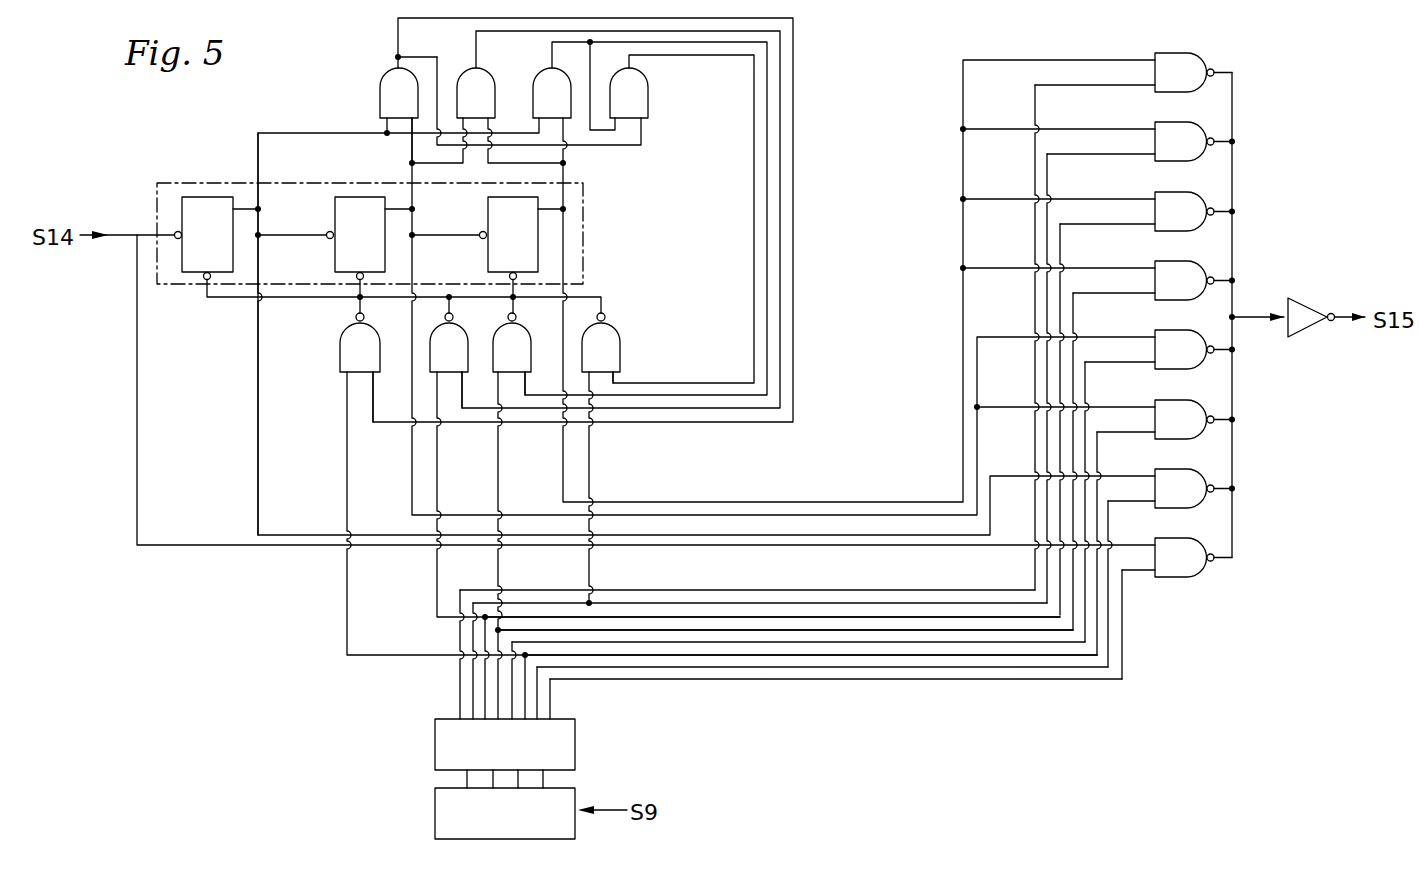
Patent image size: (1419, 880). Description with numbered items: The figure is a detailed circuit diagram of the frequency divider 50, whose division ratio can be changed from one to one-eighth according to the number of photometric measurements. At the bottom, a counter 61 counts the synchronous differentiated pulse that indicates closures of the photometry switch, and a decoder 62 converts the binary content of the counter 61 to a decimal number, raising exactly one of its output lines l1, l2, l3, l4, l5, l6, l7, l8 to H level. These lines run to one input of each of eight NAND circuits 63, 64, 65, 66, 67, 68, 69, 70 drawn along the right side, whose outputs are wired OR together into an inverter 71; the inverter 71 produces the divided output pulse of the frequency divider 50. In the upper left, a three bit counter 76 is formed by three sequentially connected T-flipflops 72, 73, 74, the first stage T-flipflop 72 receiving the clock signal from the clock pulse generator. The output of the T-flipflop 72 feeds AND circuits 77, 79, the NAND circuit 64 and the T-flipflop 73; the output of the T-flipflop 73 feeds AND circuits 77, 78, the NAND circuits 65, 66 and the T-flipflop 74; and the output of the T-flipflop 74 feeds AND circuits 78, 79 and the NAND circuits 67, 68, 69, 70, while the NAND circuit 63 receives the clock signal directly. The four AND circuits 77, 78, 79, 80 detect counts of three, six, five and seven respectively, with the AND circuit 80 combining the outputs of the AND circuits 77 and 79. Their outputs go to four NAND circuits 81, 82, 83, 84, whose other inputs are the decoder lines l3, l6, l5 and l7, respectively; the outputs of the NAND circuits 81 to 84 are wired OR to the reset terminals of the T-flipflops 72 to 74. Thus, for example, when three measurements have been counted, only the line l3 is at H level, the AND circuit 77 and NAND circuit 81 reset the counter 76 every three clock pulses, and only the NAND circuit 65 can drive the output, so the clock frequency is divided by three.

The frequency divider 50 is at (285, 732).
The counter 61 is at (435, 810).
The decoder 62 is at (435, 745).
The NAND circuit 63 is at (1198, 569).
The NAND circuit 64 is at (1198, 500).
The NAND circuit 65 is at (1198, 431).
The NAND circuit 66 is at (1198, 361).
The NAND circuit 67 is at (1198, 292).
The NAND circuit 68 is at (1198, 223).
The NAND circuit 69 is at (1198, 153).
The NAND circuit 70 is at (1198, 84).
The inverter 71 is at (1305, 311).
The first stage T-flipflop 72 is at (186, 268).
The second stage T-flipflop 73 is at (340, 208).
The third stage T-flipflop 74 is at (488, 206).
The three bit counter 76 is at (215, 183).
The AND circuit 77 is at (392, 78).
The AND circuit 78 is at (480, 78).
The AND circuit 79 is at (557, 80).
The AND circuit 80 is at (636, 78).
The NAND circuit 81 is at (350, 327).
The NAND circuit 82 is at (453, 328).
The NAND circuit 83 is at (520, 333).
The NAND circuit 84 is at (608, 325).
The output line l1 is at (737, 680).
The output line l2 is at (765, 668).
The output line l3 is at (818, 656).
The output line l4 is at (848, 643).
The output line l5 is at (902, 629).
The output line l6 is at (930, 616).
The output line l7 is at (968, 604).
The output line l8 is at (1015, 591).